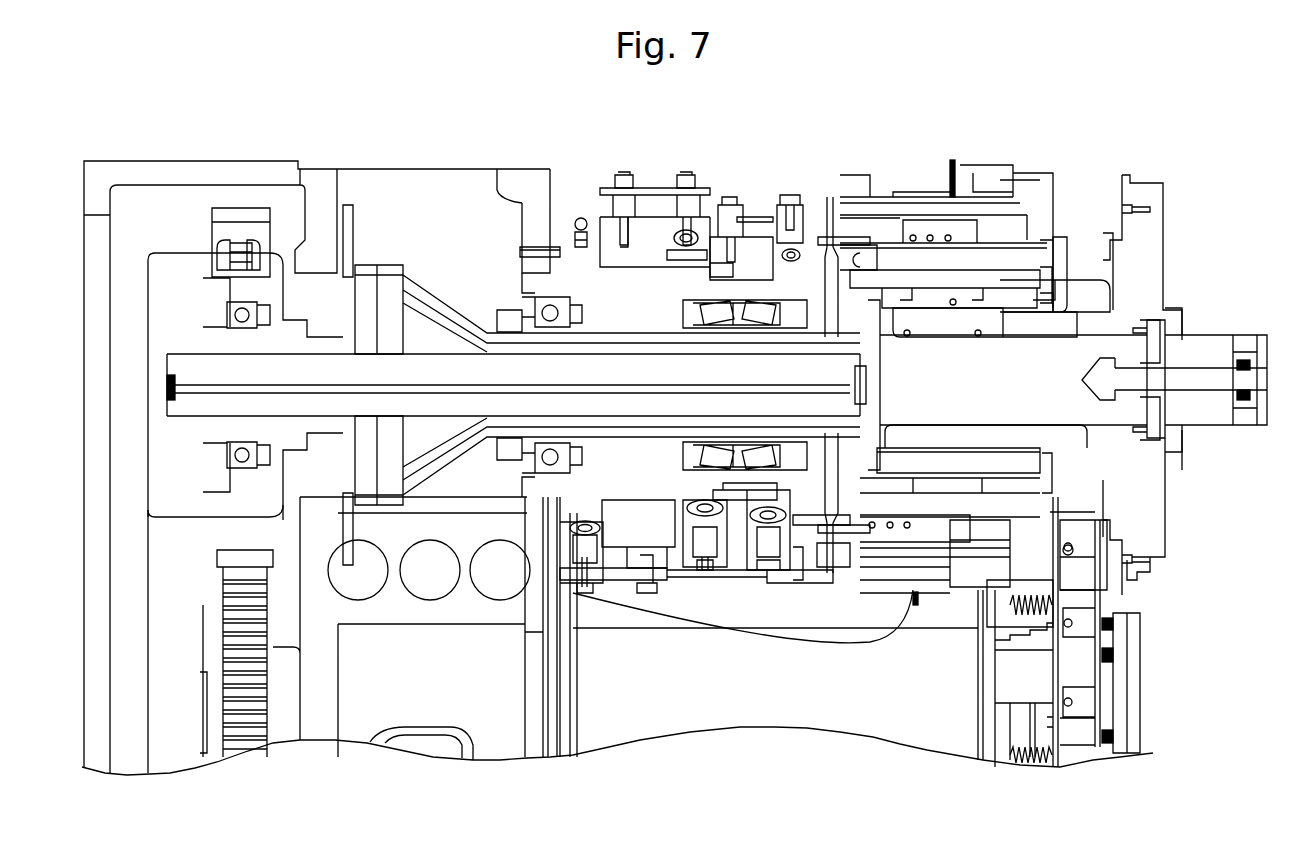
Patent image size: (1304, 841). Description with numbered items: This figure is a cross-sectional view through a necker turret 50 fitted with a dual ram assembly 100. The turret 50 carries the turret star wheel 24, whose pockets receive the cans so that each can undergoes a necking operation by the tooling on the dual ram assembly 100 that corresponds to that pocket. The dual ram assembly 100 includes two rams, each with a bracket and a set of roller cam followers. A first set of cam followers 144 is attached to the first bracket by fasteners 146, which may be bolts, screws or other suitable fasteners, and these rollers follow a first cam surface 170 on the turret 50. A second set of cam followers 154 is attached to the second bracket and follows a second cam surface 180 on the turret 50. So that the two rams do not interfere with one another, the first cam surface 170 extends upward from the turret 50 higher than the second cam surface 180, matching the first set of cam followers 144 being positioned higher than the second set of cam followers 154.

The turret star wheel 24 is at (1086, 198).
The turret 50 is at (207, 143).
The dual ram assembly 100 is at (633, 178).
The first set of cam followers 144 is at (587, 210).
The fasteners 146 is at (622, 175).
The second set of cam followers 154 is at (793, 204).
The first cam surface 170 is at (657, 210).
The second cam surface 180 is at (765, 230).